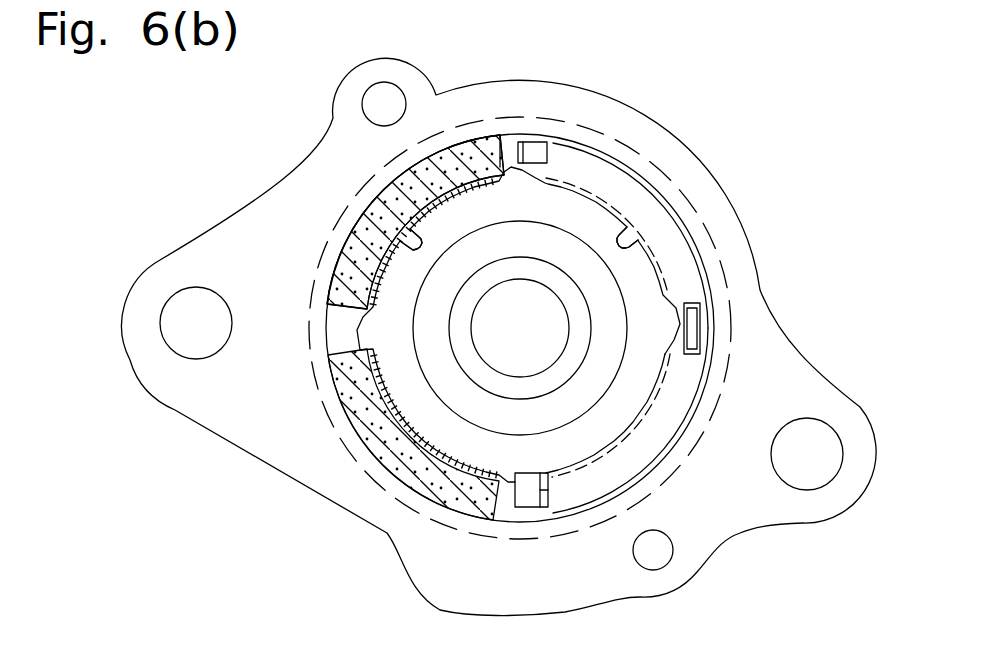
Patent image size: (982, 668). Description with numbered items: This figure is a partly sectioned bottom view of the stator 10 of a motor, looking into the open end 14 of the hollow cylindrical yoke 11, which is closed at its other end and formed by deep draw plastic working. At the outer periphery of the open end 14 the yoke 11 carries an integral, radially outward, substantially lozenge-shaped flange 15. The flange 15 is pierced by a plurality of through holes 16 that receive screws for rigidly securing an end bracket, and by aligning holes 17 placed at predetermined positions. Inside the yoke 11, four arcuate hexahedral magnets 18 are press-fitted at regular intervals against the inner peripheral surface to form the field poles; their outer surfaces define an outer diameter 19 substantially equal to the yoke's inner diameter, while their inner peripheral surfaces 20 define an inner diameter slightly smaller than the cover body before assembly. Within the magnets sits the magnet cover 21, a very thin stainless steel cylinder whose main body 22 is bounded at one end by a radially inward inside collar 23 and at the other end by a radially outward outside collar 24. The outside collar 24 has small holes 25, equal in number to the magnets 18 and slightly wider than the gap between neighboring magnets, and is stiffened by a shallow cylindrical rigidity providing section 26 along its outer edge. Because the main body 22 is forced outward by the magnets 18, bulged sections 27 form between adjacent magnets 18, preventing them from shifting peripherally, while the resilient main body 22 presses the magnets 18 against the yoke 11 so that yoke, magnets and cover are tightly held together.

The stator 10 is at (208, 105).
The yoke 11 is at (672, 180).
The open end 14 is at (691, 256).
The flange 15 is at (258, 200).
The through holes 16 is at (206, 311).
The aligning holes 17 is at (371, 107).
The magnets 18 is at (452, 160).
The outer diameter 19 is at (450, 165).
The inner peripheral surfaces 20 is at (408, 237).
The magnet cover 21 is at (589, 165).
The main body 22 is at (641, 250).
The inside collar 23 is at (641, 297).
The outside collar 24 is at (657, 417).
The small holes 25 is at (702, 322).
The rigidity providing section 26 is at (698, 397).
The bulged sections 27 is at (358, 325).